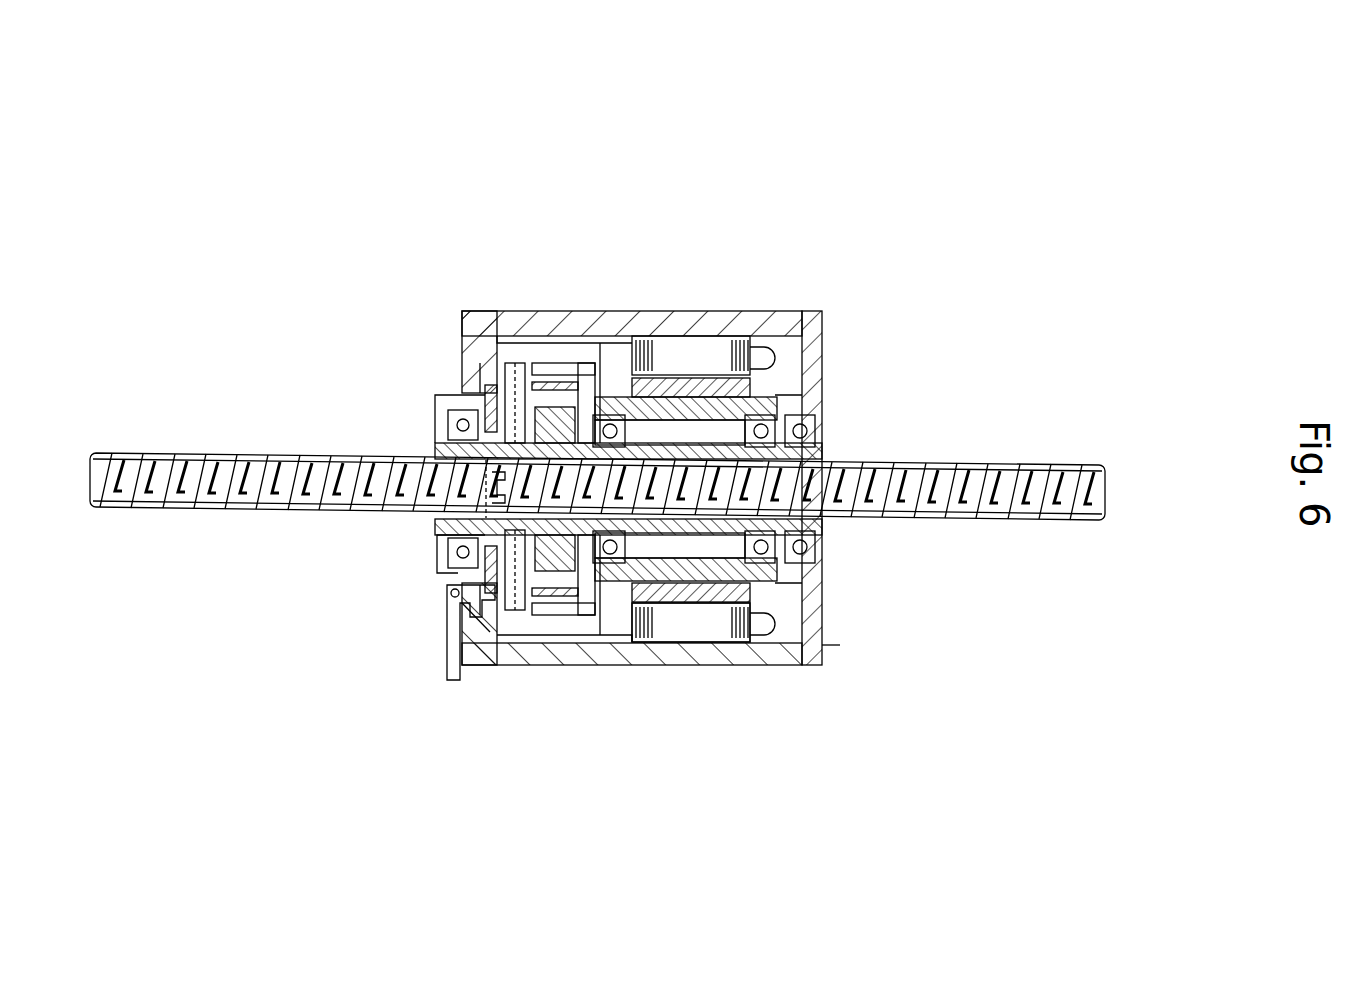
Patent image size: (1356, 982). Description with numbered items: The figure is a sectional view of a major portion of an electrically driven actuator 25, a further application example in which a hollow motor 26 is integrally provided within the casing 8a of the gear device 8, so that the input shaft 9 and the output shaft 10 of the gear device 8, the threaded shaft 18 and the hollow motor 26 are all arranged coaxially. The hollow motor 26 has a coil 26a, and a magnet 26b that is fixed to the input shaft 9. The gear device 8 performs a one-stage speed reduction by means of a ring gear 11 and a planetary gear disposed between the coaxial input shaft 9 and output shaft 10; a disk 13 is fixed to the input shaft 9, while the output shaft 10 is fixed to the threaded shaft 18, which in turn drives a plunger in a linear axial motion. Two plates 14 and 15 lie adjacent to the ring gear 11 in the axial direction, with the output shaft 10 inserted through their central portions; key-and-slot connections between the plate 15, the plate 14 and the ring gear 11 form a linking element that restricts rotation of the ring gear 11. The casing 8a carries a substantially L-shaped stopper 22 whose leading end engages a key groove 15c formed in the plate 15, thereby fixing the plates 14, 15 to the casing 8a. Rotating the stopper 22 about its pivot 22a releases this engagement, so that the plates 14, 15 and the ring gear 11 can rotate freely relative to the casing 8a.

The gear device 8 is at (687, 660).
The casing 8a is at (642, 311).
The input shaft 9 is at (822, 575).
The output shaft 10 is at (440, 525).
The ring gear 11 is at (565, 620).
The disk 13 is at (600, 628).
The plate 14 is at (515, 625).
The plate 15 is at (470, 385).
The key groove 15c is at (500, 620).
The threaded shaft 18 is at (180, 505).
The stopper 22 is at (455, 655).
The pivot 22a is at (440, 598).
The electrically driven actuator 25 is at (513, 240).
The hollow motor 26 is at (708, 365).
The coil 26a is at (717, 627).
The magnet 26b is at (820, 625).